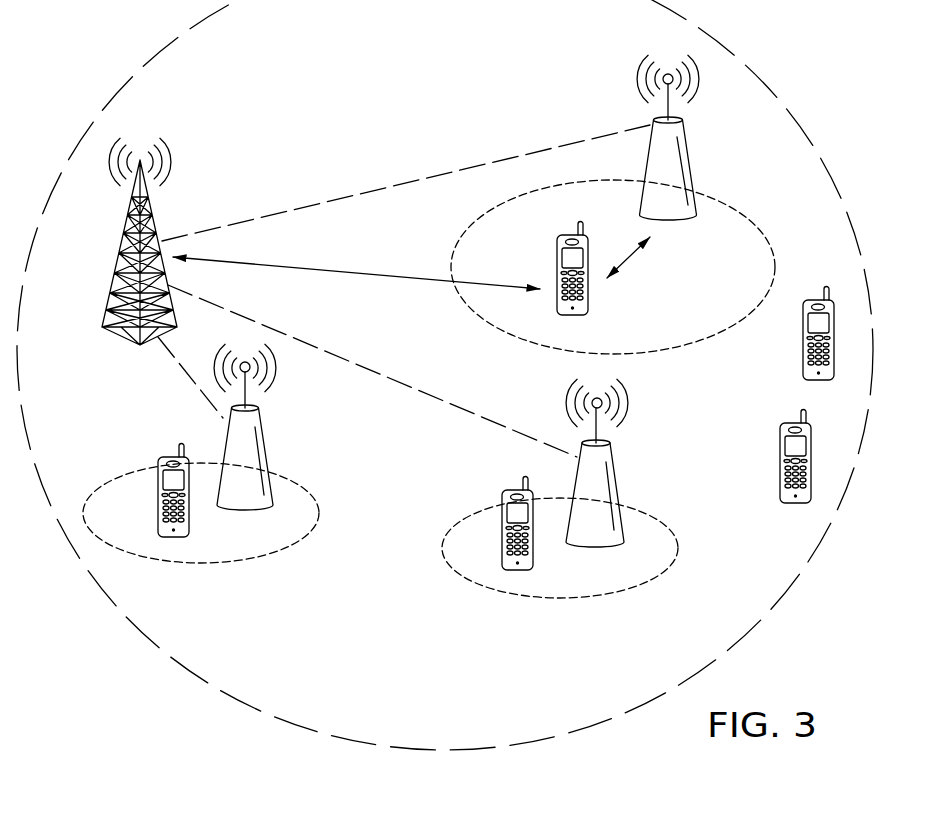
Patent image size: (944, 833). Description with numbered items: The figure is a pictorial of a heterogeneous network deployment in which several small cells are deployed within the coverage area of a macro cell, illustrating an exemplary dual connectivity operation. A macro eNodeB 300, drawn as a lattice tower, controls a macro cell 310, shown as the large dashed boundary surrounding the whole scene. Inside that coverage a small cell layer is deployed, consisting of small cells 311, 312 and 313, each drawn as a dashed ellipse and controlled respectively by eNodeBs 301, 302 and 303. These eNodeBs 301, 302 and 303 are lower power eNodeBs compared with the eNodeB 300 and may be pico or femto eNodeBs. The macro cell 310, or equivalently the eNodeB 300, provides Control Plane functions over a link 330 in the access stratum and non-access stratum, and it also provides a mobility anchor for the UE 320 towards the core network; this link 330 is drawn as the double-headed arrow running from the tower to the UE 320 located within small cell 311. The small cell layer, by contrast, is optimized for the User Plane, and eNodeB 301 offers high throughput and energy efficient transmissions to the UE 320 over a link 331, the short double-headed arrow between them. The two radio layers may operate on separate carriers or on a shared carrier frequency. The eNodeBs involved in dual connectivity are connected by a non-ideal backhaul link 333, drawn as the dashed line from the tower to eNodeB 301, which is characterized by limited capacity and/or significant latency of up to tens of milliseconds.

The eNodeB 300 is at (117, 257).
The eNodeB 301 is at (690, 168).
The eNodeB 302 is at (617, 492).
The eNodeB 303 is at (268, 455).
The macro cell 310 is at (142, 61).
The small cell 311 is at (775, 260).
The small cell 312 is at (560, 600).
The small cell 313 is at (198, 565).
The UE 320 is at (556, 275).
The link 330 is at (358, 270).
The link 331 is at (632, 258).
The non-ideal backhaul link 333 is at (414, 178).